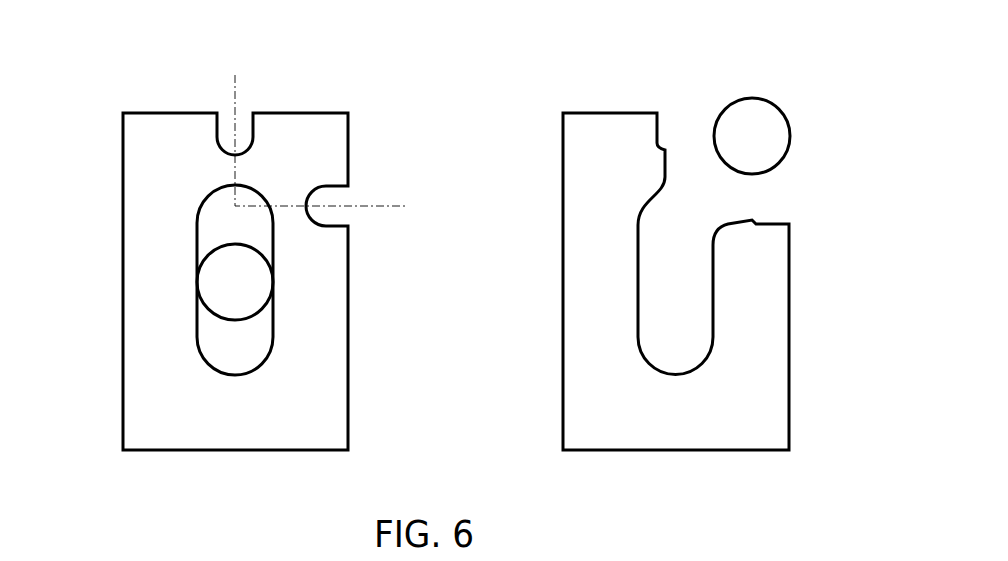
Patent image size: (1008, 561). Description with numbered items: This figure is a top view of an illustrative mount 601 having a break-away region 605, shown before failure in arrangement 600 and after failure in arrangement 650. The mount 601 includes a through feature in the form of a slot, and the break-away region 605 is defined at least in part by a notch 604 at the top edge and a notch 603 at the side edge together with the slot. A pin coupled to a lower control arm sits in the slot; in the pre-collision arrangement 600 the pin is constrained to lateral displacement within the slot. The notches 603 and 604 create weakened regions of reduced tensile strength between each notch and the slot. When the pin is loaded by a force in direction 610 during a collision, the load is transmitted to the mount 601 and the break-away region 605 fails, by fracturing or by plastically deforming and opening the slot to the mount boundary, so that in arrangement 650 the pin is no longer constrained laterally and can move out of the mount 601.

The arrangement 600 is at (255, 31).
The arrangement 650 is at (733, 31).
The mount 601 is at (302, 424).
The notch 603 is at (348, 196).
The notch 604 is at (229, 111).
The break-away region 605 is at (302, 157).
The direction 610 is at (235, 478).